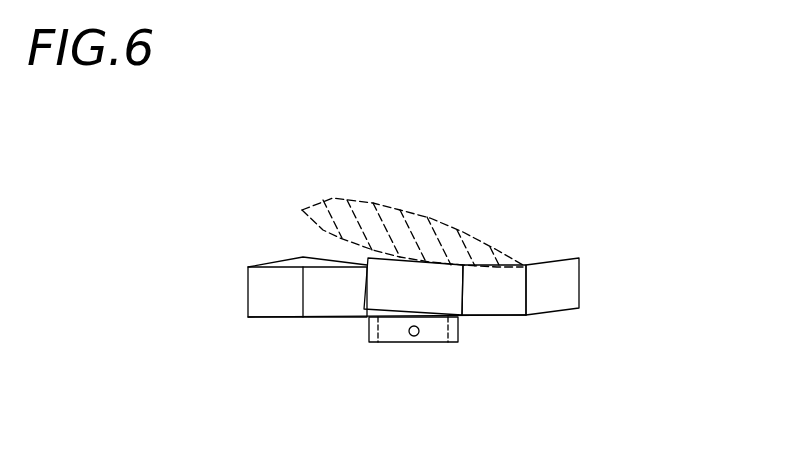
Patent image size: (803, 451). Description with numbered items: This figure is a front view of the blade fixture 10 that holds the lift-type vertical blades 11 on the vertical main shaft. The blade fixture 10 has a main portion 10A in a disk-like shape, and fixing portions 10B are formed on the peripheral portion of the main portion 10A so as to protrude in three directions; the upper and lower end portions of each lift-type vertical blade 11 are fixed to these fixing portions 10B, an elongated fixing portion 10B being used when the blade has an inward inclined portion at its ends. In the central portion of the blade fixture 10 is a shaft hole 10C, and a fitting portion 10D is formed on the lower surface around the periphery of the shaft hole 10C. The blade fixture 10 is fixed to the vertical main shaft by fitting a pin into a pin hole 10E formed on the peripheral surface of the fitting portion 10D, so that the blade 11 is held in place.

The blade fixture 10 is at (421, 280).
The main portion 10A is at (328, 317).
The fixing portion 10B is at (281, 260).
The shaft hole 10C is at (378, 342).
The fitting portion 10D is at (450, 342).
The pin hole 10E is at (409, 336).
The lift-type vertical blade 11 is at (373, 203).